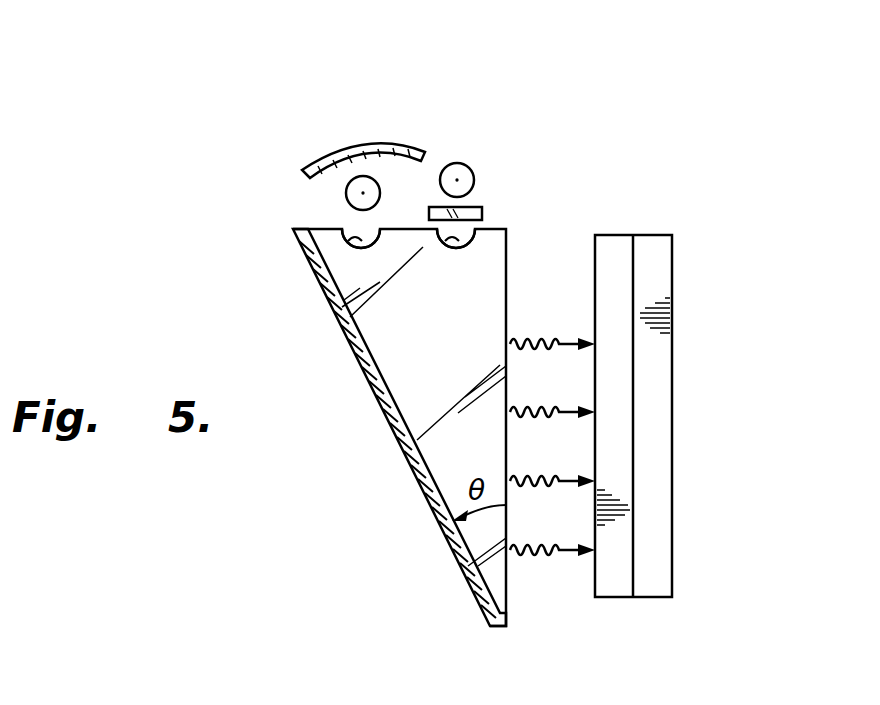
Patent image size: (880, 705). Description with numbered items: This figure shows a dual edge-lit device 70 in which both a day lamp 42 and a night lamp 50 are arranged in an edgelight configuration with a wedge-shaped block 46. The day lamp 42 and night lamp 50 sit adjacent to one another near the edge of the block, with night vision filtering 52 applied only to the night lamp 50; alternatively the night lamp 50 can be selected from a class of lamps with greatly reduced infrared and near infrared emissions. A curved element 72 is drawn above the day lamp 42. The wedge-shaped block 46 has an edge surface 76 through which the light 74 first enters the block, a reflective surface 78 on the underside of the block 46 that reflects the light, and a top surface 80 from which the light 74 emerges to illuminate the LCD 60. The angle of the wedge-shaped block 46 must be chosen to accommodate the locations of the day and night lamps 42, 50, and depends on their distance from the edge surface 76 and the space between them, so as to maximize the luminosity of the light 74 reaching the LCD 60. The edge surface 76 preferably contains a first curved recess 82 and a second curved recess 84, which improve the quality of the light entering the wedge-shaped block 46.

The dual edge-lit device 70 is at (773, 72).
The reflector 72 is at (330, 141).
The day lamp 42 is at (372, 185).
The night lamp 50 is at (470, 168).
The night vision filtering 52 is at (485, 207).
The edge surface 76 is at (328, 229).
The reflective surface 78 is at (372, 387).
The first curved recess 82 is at (368, 252).
The second curved recess 84 is at (457, 241).
The wedge-shaped block 46 is at (440, 405).
The light 74 is at (548, 562).
The LCD 60 is at (683, 483).
The top surface 80 is at (506, 297).